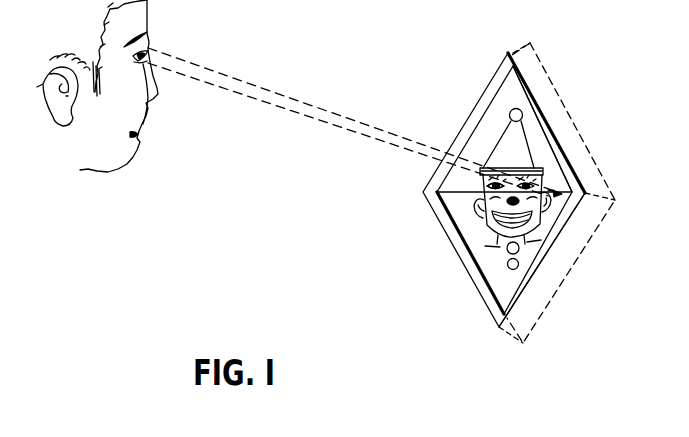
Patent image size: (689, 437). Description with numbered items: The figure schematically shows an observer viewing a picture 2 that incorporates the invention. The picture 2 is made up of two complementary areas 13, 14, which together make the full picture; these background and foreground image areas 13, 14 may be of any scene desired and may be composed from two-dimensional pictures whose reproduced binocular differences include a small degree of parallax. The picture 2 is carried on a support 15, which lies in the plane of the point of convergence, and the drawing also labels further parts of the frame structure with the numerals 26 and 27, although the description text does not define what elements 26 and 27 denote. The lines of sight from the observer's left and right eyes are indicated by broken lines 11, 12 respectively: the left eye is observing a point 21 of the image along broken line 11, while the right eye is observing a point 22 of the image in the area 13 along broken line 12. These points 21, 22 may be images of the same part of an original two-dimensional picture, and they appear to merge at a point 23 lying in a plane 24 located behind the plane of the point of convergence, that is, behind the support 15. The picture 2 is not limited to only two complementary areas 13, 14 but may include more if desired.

The picture 2 is at (458, 263).
The broken line 11 is at (241, 82).
The broken line 12 is at (262, 100).
The complementary area 13 is at (512, 99).
The complementary area 14 is at (518, 243).
The support 15 is at (435, 176).
The point 21 is at (496, 171).
The point 22 is at (496, 186).
The point 23 is at (566, 192).
The plane 24 is at (543, 298).
The lower frame edge 26 is at (513, 305).
The side frame edge 27 is at (562, 155).